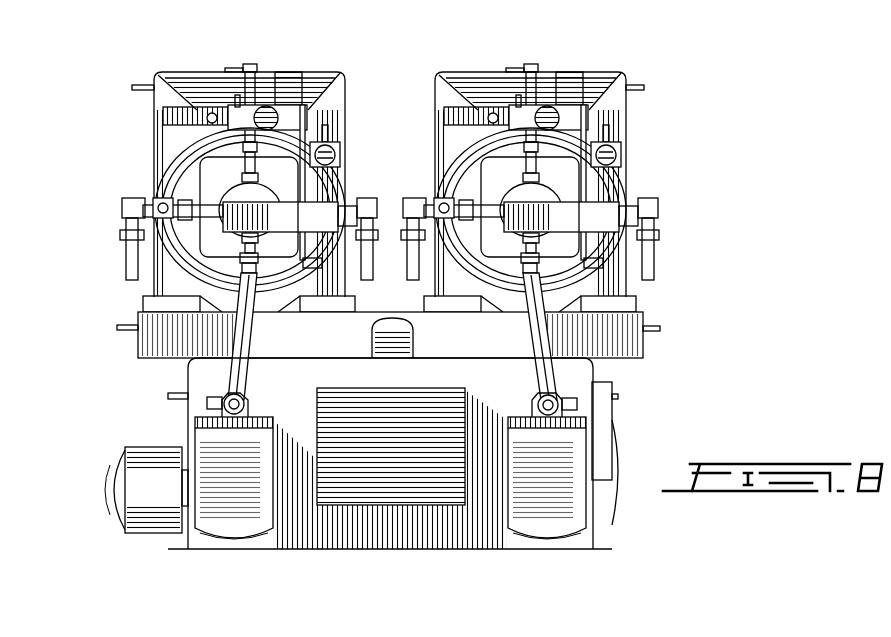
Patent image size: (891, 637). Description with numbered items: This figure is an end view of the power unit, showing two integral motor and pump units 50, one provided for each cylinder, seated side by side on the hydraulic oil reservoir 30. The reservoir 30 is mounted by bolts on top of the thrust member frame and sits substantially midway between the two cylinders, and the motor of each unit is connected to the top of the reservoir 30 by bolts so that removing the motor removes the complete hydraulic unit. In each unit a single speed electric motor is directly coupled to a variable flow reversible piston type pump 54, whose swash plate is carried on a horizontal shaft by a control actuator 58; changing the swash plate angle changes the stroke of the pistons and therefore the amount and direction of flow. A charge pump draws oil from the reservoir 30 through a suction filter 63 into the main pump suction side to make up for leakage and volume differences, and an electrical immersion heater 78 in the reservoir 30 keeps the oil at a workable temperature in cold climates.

The hydraulic oil reservoir 30 is at (373, 525).
The integral motor and pump 50 is at (264, 66).
The variable flow reversible piston type pump 54 is at (210, 174).
The control actuator 58 is at (340, 147).
The suction filter 63 is at (262, 452).
The electrical immersion heater 78 is at (140, 455).